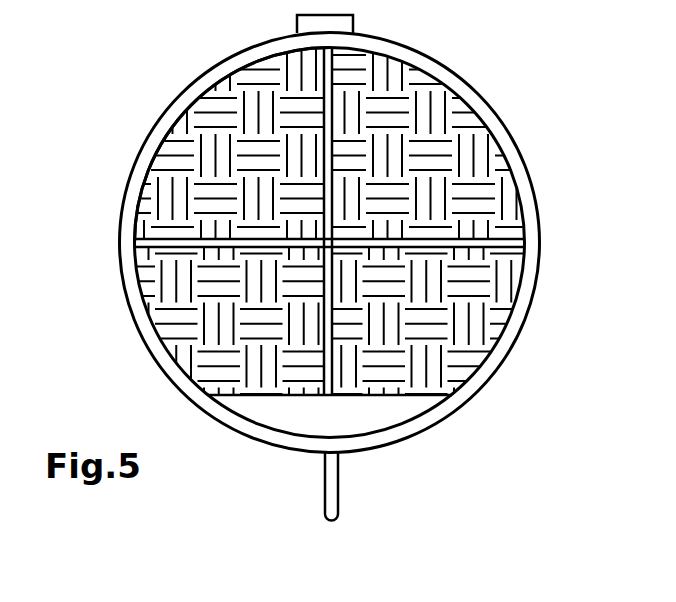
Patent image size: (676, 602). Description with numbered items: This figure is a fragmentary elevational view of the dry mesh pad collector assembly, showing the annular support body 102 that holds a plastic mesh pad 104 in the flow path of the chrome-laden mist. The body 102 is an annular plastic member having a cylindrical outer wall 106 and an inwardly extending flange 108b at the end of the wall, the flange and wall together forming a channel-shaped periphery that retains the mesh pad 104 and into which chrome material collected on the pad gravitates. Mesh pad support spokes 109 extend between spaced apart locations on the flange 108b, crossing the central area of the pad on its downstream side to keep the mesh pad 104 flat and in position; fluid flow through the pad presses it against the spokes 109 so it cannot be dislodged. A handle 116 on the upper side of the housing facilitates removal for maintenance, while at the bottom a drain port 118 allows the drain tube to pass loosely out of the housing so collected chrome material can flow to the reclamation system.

The annular support body 102 is at (527, 310).
The plastic mesh pad 104 is at (417, 150).
The cylindrical outer wall 106 is at (176, 100).
The inwardly extending flange 108b is at (127, 267).
The mesh pad support spokes 109 is at (325, 72).
The handle 116 is at (330, 15).
The drain port 118 is at (337, 487).